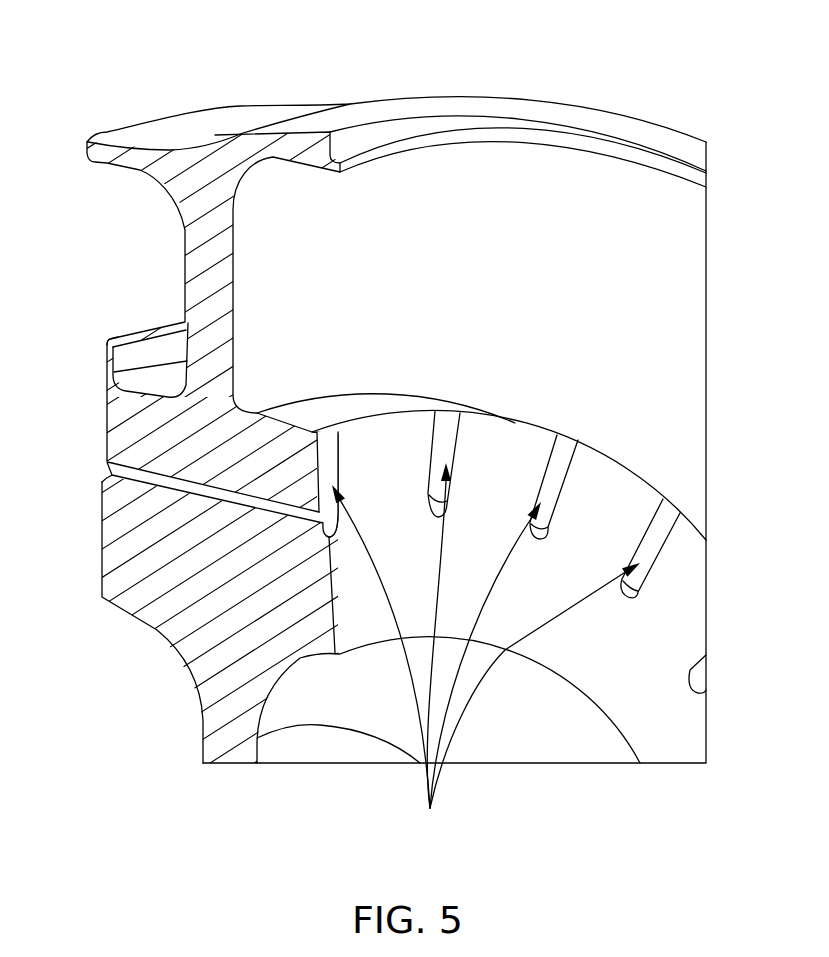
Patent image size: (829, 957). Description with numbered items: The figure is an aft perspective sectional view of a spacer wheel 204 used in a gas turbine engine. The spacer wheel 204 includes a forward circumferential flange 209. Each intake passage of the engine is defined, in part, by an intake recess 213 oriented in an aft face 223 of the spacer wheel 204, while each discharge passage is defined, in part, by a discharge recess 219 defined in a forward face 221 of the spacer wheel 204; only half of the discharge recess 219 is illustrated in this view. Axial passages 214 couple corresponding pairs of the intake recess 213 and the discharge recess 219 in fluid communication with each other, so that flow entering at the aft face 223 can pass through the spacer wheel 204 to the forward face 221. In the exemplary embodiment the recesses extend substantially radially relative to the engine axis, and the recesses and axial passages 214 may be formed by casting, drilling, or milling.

The spacer wheel 204 is at (150, 75).
The forward circumferential flange 209 is at (155, 348).
The intake recess 213 is at (486, 652).
The axial passage 214 is at (145, 477).
The discharge recess 219 is at (105, 342).
The forward face 221 is at (132, 323).
The aft face 223 is at (620, 485).